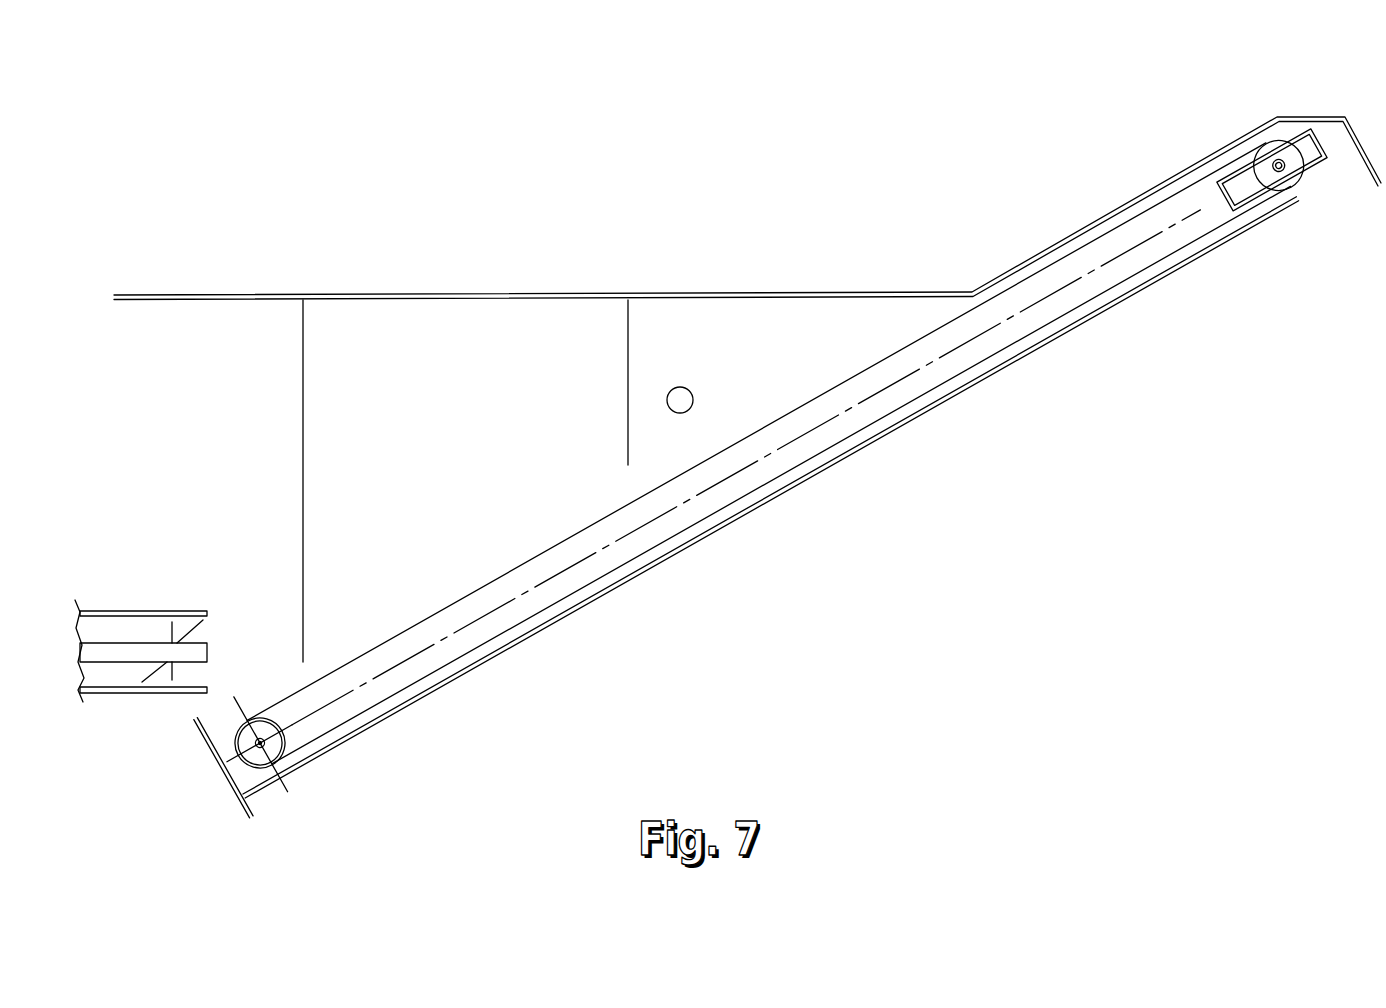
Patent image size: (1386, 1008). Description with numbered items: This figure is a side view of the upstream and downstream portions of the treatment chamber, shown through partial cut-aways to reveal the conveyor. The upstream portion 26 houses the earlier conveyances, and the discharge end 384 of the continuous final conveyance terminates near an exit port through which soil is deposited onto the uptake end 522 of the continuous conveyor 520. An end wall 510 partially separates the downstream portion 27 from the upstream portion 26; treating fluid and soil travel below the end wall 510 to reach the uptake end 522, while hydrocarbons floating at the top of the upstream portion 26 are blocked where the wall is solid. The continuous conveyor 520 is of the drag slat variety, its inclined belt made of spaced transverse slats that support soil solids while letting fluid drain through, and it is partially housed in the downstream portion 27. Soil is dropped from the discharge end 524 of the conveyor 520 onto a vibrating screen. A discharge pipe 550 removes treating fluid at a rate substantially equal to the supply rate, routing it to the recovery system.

The upstream portion 26 is at (181, 426).
The downstream portion 27 is at (453, 421).
The discharge end 384 is at (238, 616).
The end wall 510 is at (302, 427).
The continuous conveyor 520 is at (762, 442).
The uptake end 522 is at (318, 656).
The discharge end 524 is at (1231, 118).
The discharge pipe 550 is at (684, 386).